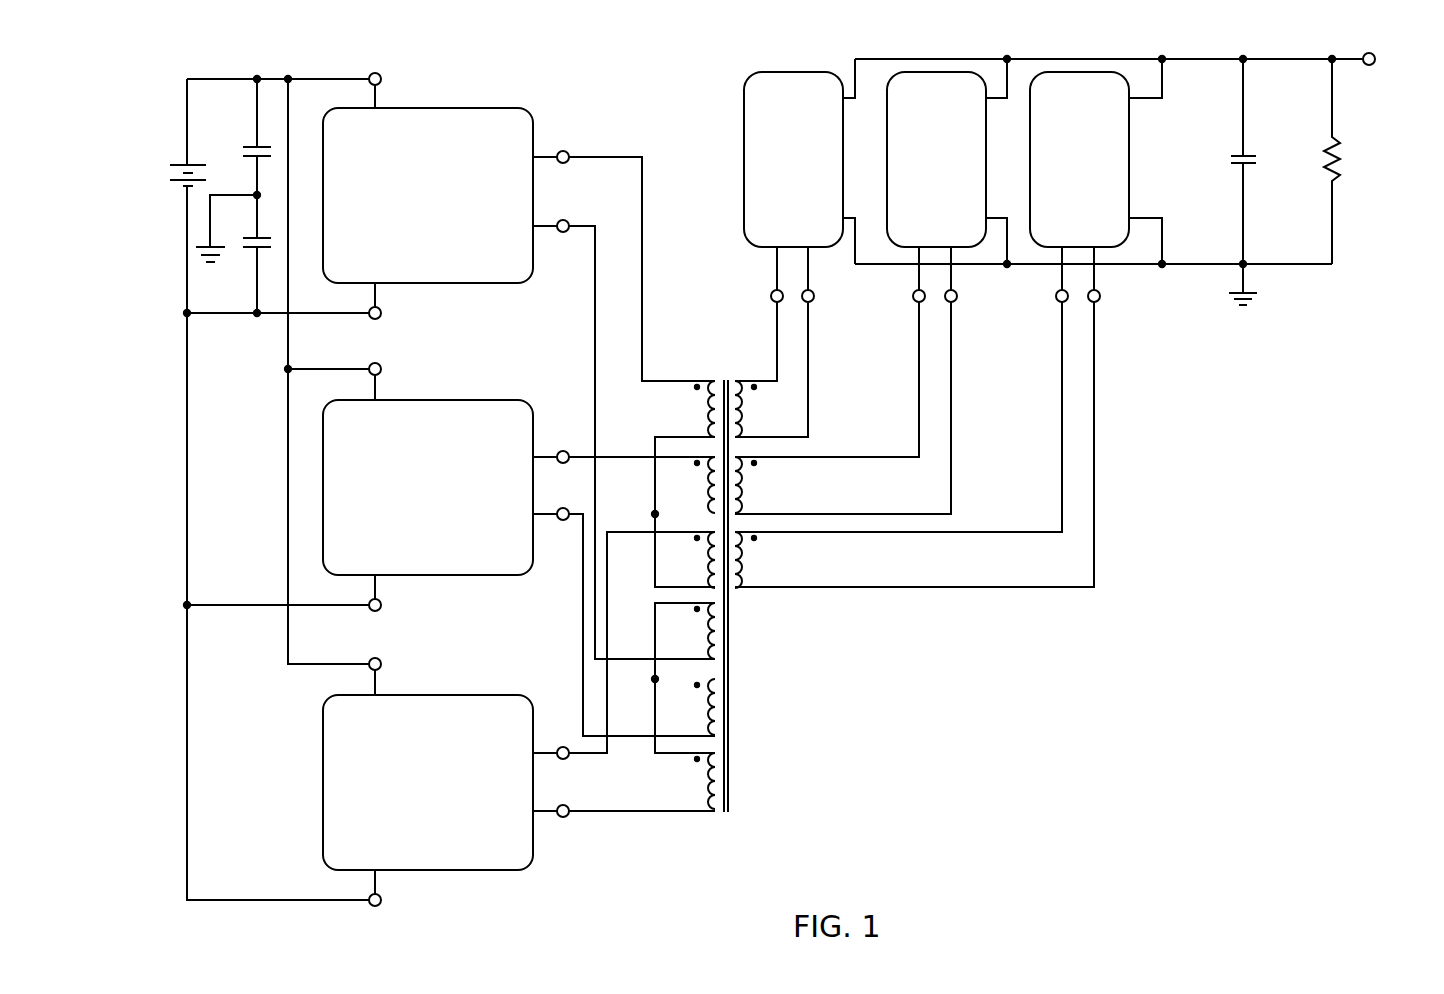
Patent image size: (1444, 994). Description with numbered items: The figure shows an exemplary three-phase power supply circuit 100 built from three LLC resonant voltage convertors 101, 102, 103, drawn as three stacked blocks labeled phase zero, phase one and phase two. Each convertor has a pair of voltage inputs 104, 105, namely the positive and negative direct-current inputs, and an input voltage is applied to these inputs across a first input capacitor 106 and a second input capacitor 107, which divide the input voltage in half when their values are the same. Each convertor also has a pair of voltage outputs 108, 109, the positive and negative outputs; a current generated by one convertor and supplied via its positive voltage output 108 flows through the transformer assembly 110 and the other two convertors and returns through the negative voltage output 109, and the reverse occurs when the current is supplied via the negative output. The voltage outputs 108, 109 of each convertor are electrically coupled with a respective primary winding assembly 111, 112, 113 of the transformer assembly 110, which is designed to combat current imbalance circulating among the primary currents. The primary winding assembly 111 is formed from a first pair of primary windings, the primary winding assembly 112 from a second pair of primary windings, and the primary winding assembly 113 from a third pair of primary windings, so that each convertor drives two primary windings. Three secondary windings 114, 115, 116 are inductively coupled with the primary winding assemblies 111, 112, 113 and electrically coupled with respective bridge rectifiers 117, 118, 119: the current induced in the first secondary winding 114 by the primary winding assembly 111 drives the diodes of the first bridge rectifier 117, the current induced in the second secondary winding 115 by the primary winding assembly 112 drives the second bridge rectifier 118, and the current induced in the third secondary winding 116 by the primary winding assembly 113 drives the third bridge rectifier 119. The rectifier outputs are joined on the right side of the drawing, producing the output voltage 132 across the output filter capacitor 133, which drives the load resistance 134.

The three-phase power supply circuit 100 is at (142, 74).
The LLC resonant voltage convertor 101 is at (437, 108).
The LLC resonant voltage convertor 102 is at (437, 400).
The LLC resonant voltage convertor 103 is at (437, 695).
The voltage input DC+ 104 is at (383, 79).
The voltage input DC− 105 is at (383, 316).
The capacitor C1 106 is at (250, 145).
The capacitor C2 107 is at (250, 250).
The voltage output OUT+ 108 is at (563, 150).
The voltage output OUT− 109 is at (563, 233).
The transformer assembly T1 110 is at (752, 338).
The primary winding assembly 111 is at (664, 417).
The primary winding assembly 112 is at (664, 490).
The primary winding assembly 113 is at (664, 563).
The secondary winding S1 114 is at (790, 416).
The secondary winding S2 115 is at (790, 490).
The secondary winding S3 116 is at (790, 563).
The bridge rectifier 117 is at (744, 160).
The bridge rectifier 118 is at (887, 160).
The bridge rectifier 119 is at (1030, 160).
The output voltage VOUT 132 is at (1376, 61).
The output filter capacitor C3 133 is at (1238, 152).
The load resistance RLOAD 134 is at (1330, 146).